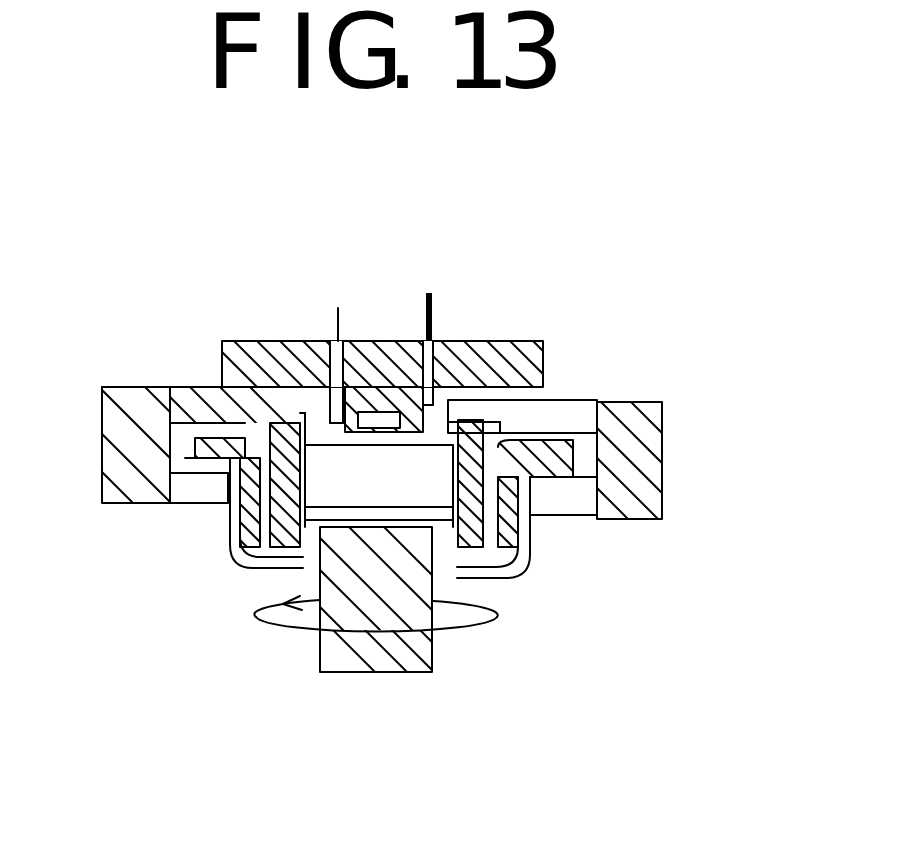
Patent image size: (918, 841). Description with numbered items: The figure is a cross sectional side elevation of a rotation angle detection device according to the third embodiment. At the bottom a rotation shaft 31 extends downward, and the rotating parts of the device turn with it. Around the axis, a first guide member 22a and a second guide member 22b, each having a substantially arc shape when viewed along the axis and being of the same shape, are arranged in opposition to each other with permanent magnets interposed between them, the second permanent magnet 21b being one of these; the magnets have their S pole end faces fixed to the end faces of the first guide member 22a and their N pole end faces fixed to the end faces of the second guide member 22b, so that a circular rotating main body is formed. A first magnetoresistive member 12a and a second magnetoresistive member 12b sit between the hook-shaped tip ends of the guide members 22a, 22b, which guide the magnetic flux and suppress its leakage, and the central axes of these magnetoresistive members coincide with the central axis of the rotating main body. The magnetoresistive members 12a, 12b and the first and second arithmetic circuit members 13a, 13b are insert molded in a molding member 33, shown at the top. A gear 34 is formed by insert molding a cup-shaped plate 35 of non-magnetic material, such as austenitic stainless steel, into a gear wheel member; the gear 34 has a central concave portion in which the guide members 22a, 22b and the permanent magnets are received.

The first magnetoresistive member 12a is at (386, 412).
The second magnetoresistive member 12b is at (367, 440).
The first arithmetic circuit member 13a is at (446, 400).
The second arithmetic circuit member 13b is at (265, 343).
The second permanent magnet 21b is at (382, 537).
The first guide member 22a is at (497, 450).
The second guide member 22b is at (255, 412).
The rotation shaft 31 is at (400, 658).
The molding member 33 is at (516, 346).
The gear 34 is at (640, 450).
The cup-shaped plate 35 is at (252, 521).